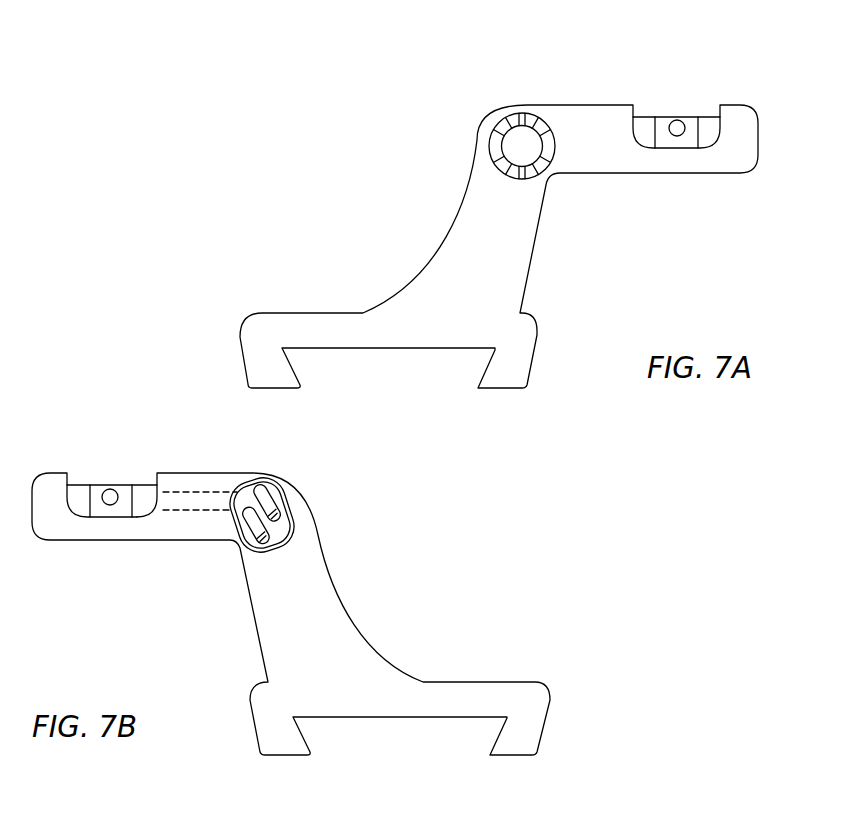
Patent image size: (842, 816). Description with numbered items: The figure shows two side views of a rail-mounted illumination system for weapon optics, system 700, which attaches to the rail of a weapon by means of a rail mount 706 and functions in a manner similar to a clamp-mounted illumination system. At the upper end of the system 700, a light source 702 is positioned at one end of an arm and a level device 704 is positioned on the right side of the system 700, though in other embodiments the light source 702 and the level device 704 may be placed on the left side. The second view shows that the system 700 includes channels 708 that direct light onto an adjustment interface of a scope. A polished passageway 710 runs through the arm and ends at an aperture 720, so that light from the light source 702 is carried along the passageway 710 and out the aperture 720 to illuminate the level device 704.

In FIG. 7A, the system 700 is at (616, 74).
In FIG. 7B, the system 700 is at (134, 418).
In FIG. 7A, the light source 702 is at (491, 116).
In FIG. 7A, the level device 704 is at (689, 115).
In FIG. 7B, the level device 704 is at (86, 474).
In FIG. 7A, the rail mount 706 is at (467, 372).
In FIG. 7B, the rail mount 706 is at (550, 727).
In FIG. 7B, the channels 708 is at (263, 480).
In FIG. 7B, the passageway 710 is at (177, 492).
In FIG. 7B, the aperture 720 is at (151, 490).